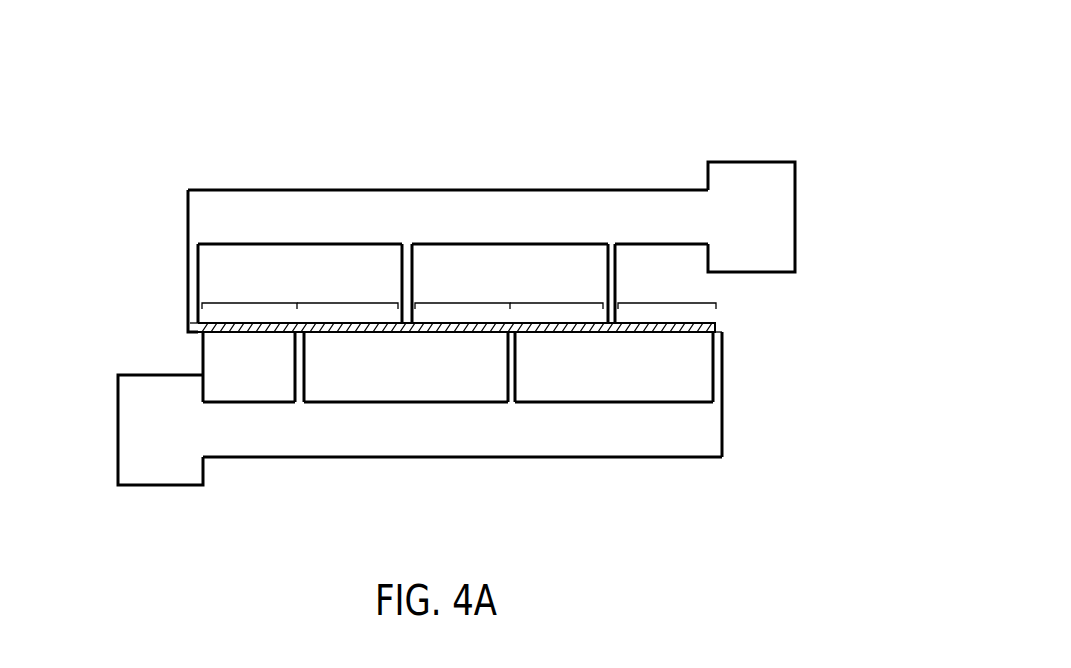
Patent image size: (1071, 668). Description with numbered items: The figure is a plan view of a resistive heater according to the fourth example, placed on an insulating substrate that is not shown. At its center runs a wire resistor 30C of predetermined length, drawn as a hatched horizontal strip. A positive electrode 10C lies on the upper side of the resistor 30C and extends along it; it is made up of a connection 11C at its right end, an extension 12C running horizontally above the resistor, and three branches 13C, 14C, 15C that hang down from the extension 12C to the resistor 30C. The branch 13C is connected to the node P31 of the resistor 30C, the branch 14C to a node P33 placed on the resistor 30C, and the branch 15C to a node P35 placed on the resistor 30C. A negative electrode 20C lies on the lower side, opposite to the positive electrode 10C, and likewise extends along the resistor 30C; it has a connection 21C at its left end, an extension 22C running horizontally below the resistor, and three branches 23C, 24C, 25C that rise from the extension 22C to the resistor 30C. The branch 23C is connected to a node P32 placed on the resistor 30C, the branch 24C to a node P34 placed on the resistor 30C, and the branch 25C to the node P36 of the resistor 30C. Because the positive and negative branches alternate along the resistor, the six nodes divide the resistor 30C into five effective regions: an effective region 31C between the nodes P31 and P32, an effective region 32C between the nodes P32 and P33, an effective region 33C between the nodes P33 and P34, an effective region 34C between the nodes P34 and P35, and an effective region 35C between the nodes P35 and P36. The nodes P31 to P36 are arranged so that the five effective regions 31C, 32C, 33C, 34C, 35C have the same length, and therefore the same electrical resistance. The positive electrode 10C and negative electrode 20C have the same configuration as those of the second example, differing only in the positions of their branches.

The positive electrode 10C is at (562, 126).
The connection 11C is at (753, 160).
The extension 12C is at (257, 188).
The branch 13C is at (194, 265).
The branch 14C is at (413, 276).
The branch 15C is at (613, 268).
The negative electrode 20C is at (587, 500).
The connection 21C is at (163, 486).
The extension 22C is at (441, 447).
The branch 23C is at (296, 367).
The branch 24C is at (516, 370).
The branch 25C is at (724, 380).
The wire resistor 30C is at (198, 326).
The effective region 31C is at (249, 292).
The effective region 32C is at (347, 292).
The effective region 33C is at (462, 292).
The effective region 34C is at (556, 292).
The effective region 35C is at (667, 292).
The node P31 is at (188, 338).
The node P32 is at (310, 336).
The node P33 is at (410, 318).
The node P34 is at (507, 335).
The node P35 is at (620, 336).
The node P36 is at (723, 336).